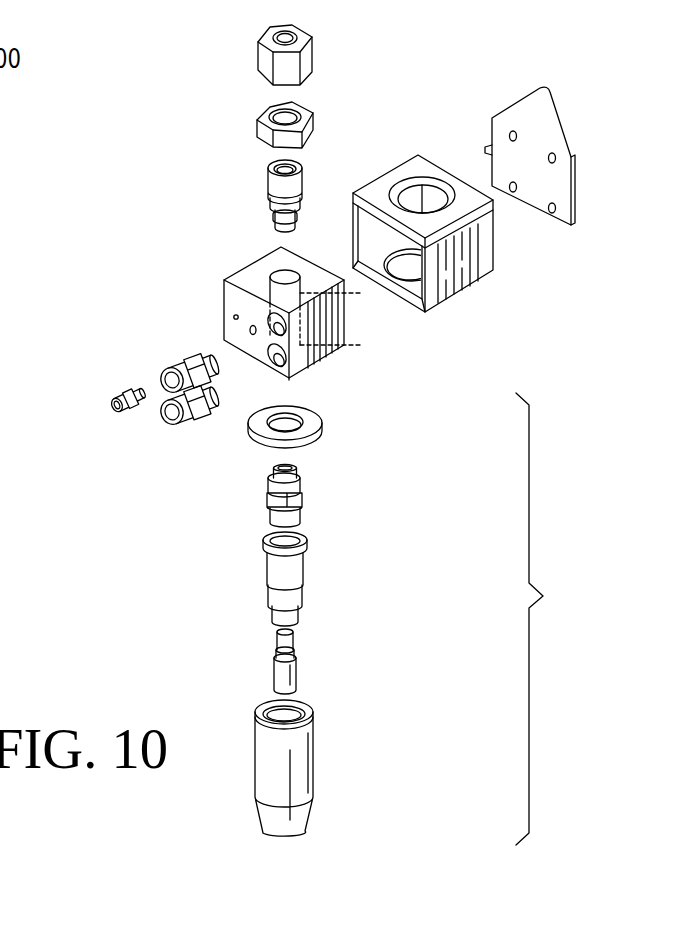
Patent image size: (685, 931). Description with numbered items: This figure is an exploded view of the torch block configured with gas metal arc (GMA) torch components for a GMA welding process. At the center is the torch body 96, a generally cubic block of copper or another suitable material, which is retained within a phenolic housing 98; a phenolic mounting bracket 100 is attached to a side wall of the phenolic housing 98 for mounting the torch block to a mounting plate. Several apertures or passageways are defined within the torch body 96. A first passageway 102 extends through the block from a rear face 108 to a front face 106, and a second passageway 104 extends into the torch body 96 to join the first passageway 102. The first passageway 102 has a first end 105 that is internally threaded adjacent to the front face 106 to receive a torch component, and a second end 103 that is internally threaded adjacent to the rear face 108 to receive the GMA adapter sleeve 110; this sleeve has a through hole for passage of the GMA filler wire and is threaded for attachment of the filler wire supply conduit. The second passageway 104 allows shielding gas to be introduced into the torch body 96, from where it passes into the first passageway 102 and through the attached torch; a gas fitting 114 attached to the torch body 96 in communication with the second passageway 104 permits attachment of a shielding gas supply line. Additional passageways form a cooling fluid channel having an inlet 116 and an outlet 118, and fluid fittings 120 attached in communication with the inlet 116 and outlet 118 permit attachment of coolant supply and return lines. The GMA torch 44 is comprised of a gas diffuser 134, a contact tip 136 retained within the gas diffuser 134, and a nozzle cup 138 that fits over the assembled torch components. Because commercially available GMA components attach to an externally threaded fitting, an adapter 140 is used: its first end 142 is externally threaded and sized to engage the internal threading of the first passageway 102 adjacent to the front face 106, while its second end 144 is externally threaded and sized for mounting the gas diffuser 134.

The GMA torch 44 is at (552, 619).
The torch body 96 is at (226, 279).
The phenolic housing 98 is at (493, 273).
The phenolic mounting bracket 100 is at (563, 118).
The first passageway 102 is at (270, 272).
The second end of first passageway 103 is at (332, 306).
The second passageway 104 is at (250, 330).
The first end of first passageway 105 is at (345, 348).
The front face 106 is at (303, 372).
The rear face 108 is at (316, 266).
The GMA adapter sleeve 110 is at (300, 174).
The gas fitting 114 is at (116, 413).
The inlet 116 is at (322, 315).
The outlet 118 is at (230, 350).
The fluid fittings 120 is at (185, 425).
The gas diffuser 134 is at (306, 568).
The contact tip 136 is at (300, 662).
The nozzle cup 138 is at (316, 762).
The adapter 140 is at (301, 500).
The first end of adapter 142 is at (297, 467).
The second end of adapter 144 is at (302, 527).